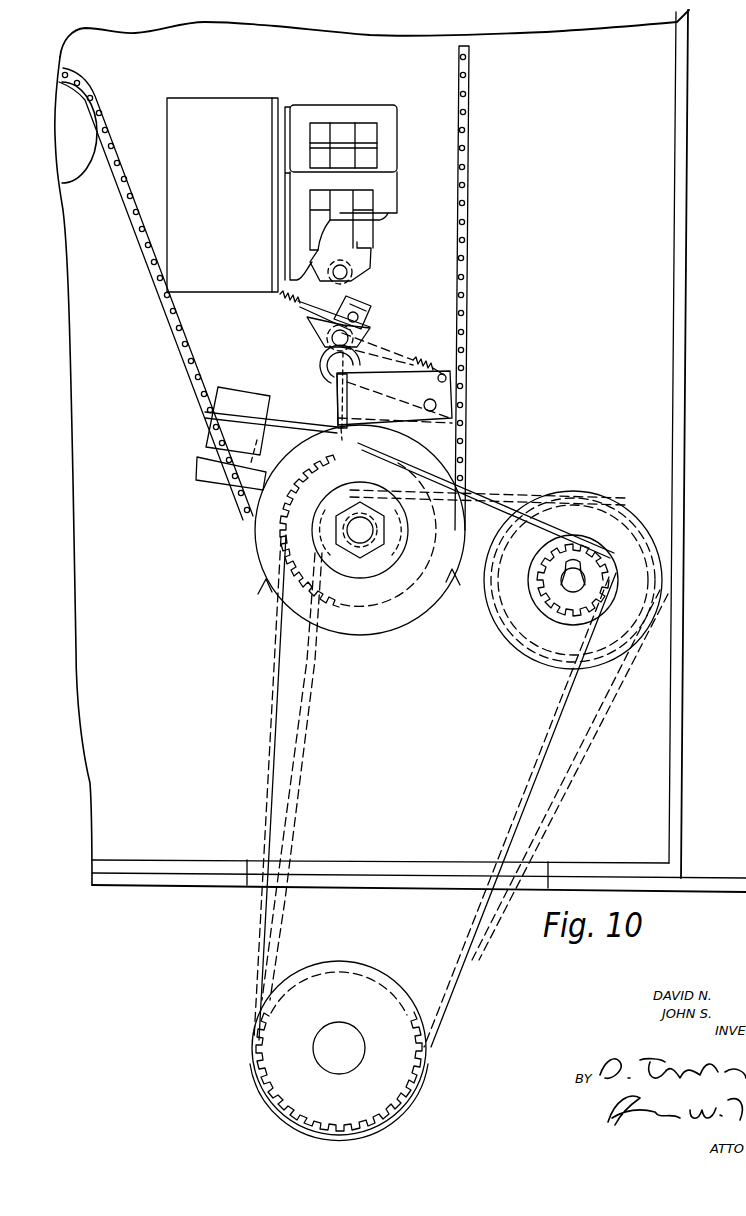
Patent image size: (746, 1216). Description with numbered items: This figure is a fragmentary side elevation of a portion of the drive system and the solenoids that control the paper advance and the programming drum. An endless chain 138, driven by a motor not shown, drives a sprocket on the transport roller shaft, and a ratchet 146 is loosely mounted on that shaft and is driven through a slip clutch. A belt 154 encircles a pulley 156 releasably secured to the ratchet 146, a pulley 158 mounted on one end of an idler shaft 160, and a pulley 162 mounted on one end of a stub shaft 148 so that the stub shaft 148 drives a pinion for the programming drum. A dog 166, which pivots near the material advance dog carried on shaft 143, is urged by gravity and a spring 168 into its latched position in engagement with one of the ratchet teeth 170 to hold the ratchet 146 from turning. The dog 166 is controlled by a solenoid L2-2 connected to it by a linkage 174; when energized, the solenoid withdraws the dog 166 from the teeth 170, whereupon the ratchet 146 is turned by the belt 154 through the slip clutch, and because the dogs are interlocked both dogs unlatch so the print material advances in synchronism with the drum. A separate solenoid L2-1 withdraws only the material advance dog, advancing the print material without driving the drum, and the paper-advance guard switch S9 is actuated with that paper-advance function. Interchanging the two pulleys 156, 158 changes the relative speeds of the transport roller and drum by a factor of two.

The endless chain 138 is at (467, 230).
The solenoid L2-1 is at (393, 133).
The solenoid L2-2 is at (387, 192).
The linkage 174 is at (368, 295).
The spring 168 is at (282, 304).
The paper-advance guard switch S9 is at (240, 398).
The dog 166 is at (337, 413).
The shaft 143 is at (437, 405).
The ratchet 146 is at (397, 625).
The ratchet teeth 170 is at (262, 591).
The pulley 156 is at (298, 537).
The pulley 158 is at (350, 497).
The idler shaft 160 is at (580, 571).
The belt 154 is at (273, 688).
The pulley 162 is at (346, 973).
The stub shaft 148 is at (338, 1030).